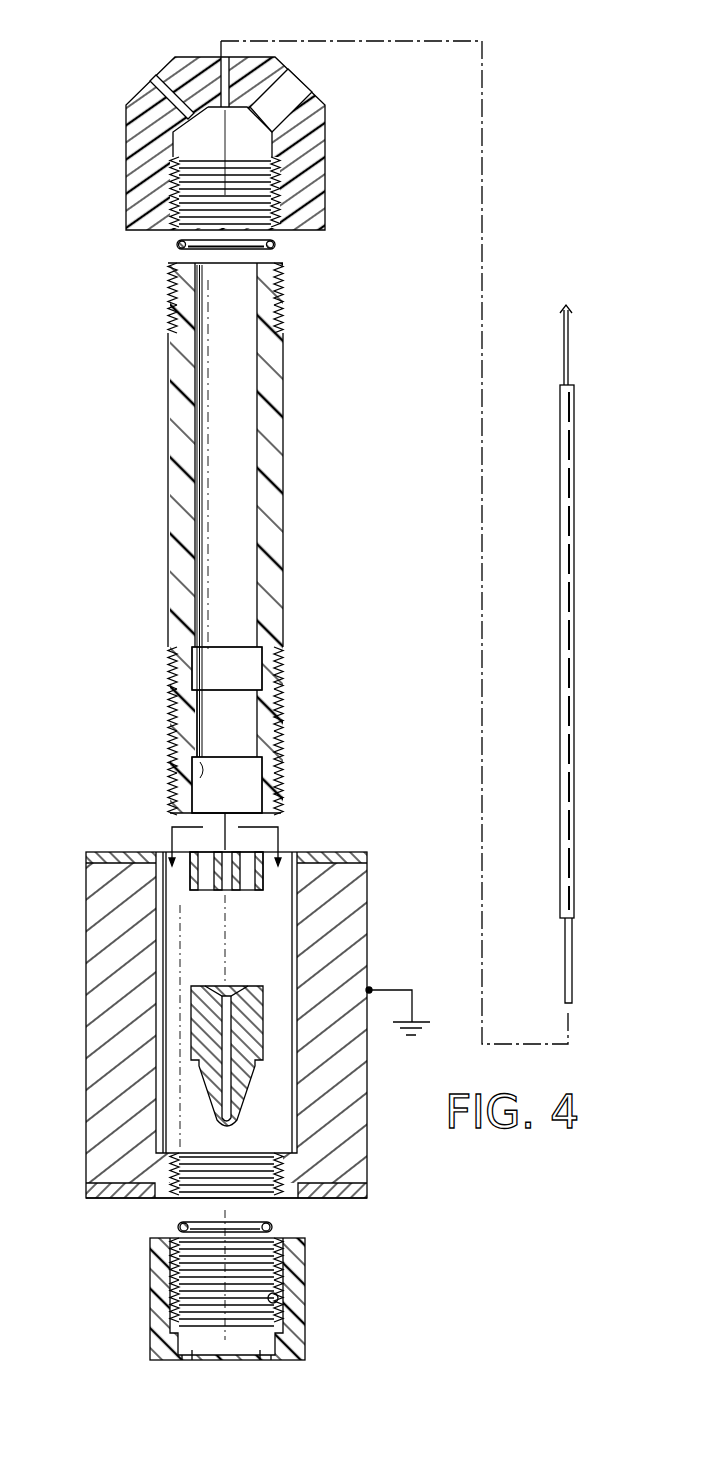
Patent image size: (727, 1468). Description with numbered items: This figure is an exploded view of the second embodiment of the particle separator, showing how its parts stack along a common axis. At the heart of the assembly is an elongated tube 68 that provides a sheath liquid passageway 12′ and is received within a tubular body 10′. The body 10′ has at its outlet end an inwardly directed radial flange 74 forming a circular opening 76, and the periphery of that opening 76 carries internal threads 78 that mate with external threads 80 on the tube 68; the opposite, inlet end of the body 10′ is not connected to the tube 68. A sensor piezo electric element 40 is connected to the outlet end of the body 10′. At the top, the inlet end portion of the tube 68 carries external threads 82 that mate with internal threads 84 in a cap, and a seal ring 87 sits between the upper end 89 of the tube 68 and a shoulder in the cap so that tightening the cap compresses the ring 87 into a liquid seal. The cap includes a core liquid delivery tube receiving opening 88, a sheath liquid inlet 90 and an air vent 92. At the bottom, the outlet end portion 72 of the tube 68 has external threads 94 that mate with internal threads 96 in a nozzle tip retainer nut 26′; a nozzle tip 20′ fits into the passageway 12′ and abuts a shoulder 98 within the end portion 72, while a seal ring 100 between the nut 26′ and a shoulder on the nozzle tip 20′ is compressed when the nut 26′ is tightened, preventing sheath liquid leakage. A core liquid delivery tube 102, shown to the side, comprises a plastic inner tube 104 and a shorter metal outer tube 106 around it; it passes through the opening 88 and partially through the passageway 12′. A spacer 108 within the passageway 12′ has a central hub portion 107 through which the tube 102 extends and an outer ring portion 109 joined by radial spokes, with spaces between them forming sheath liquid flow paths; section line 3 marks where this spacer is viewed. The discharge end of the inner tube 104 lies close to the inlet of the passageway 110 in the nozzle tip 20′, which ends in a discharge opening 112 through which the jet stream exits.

The core liquid delivery tube receiving opening 88 is at (217, 72).
The air vent 92 is at (155, 83).
The sheath liquid inlet 90 is at (292, 86).
The internal threads 84 is at (150, 198).
The seal ring 87 is at (276, 245).
The upper end 89 is at (175, 264).
The internal threads 78 is at (272, 298).
The external threads 82 is at (168, 308).
The sheath liquid passageway 12′ is at (213, 445).
The elongated tube 68 is at (273, 476).
The external threads 80 is at (172, 682).
The outlet end portion 72 is at (268, 712).
The shoulder 98 is at (200, 765).
The external threads 94 is at (272, 760).
The tubular body 10′ is at (100, 985).
The section line 3- 3 is at (228, 861).
The spacer 108 is at (204, 897).
The outer ring portion 109 is at (255, 893).
The central hub portion 107 is at (218, 892).
The passageway 110 is at (225, 1030).
The nozzle tip 20′ is at (247, 1070).
The discharge opening 112 is at (228, 1124).
The radial flange 74 is at (163, 1182).
The sensor piezo electric element 40 is at (93, 1199).
The circular opening 76 is at (200, 1185).
The seal ring 100 is at (277, 1228).
The internal threads 96 is at (277, 1298).
The retainer nut 26′ is at (135, 1338).
The plastic inner tube 104 is at (570, 340).
The metal outer tube 106 is at (568, 438).
The core liquid delivery tube 102 is at (578, 577).